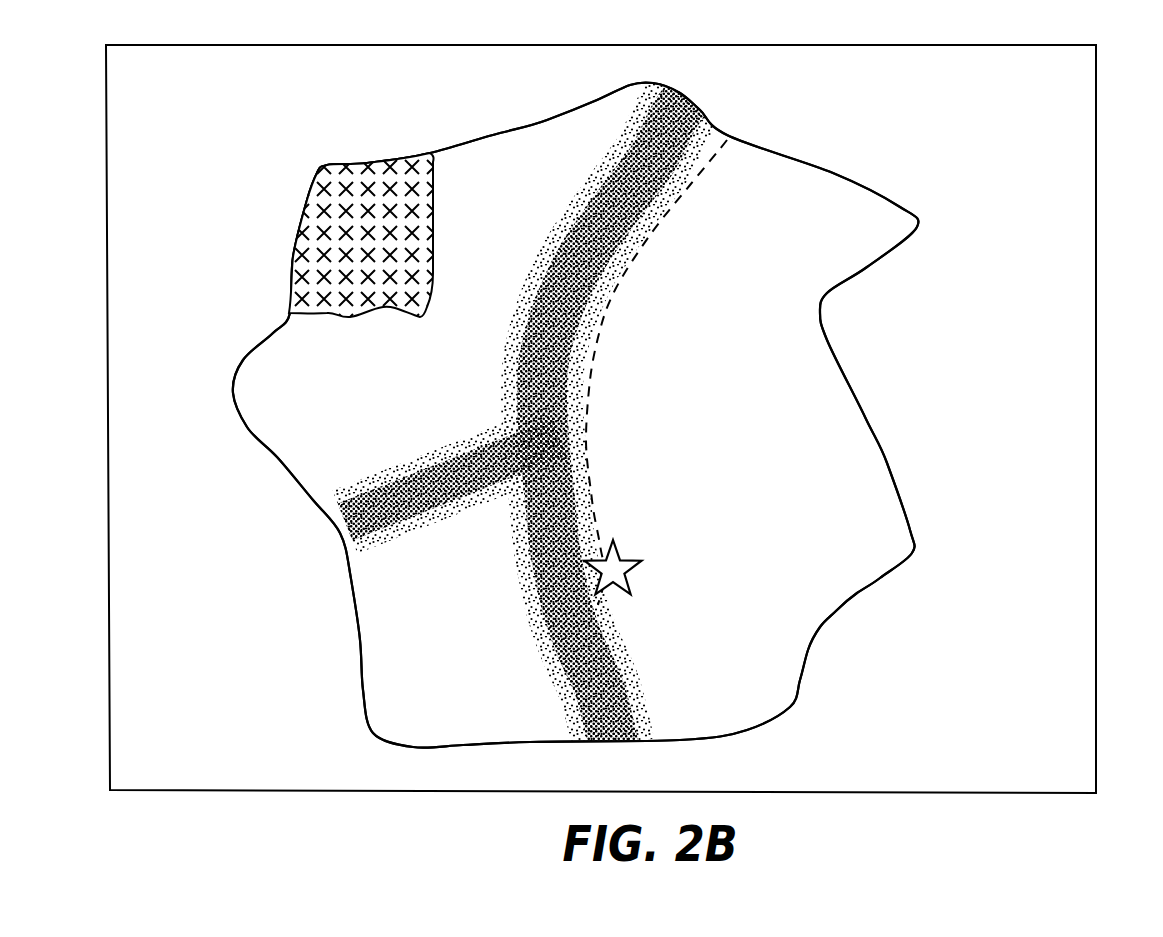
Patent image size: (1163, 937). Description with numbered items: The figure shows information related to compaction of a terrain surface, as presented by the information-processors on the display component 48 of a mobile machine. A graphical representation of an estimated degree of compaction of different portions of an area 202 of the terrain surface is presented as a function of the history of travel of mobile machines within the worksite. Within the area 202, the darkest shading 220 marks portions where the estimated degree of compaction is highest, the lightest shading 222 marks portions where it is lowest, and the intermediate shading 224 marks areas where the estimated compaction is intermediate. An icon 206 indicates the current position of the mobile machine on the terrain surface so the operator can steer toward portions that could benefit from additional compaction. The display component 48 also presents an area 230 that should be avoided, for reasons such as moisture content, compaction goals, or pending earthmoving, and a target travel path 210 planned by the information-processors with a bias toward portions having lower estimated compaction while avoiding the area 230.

The display component 48 is at (1097, 117).
The area 202 is at (833, 173).
The icon 206 is at (632, 550).
The target travel path 210 is at (587, 443).
The darkest shading 220 is at (683, 115).
The lightest shading 222 is at (333, 510).
The intermediate shading 224 is at (287, 443).
The area 230 is at (373, 163).